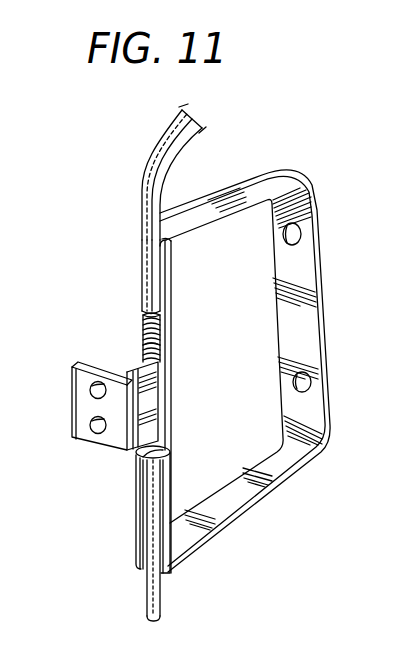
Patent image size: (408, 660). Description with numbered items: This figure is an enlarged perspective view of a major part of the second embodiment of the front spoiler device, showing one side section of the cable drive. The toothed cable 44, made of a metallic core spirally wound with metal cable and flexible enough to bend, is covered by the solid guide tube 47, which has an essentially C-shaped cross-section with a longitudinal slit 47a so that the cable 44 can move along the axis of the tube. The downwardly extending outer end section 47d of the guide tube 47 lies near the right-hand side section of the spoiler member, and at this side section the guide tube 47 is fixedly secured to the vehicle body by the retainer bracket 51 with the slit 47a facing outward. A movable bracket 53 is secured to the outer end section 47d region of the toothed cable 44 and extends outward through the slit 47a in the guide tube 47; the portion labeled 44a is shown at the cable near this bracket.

The guide tube 47 is at (165, 132).
The outer end section 47d is at (142, 264).
The longitudinal slit 47a is at (141, 592).
The toothed cable 44 is at (143, 340).
The spring end 44a is at (163, 340).
The retainer bracket 51 is at (279, 171).
The movable bracket 53 is at (114, 447).